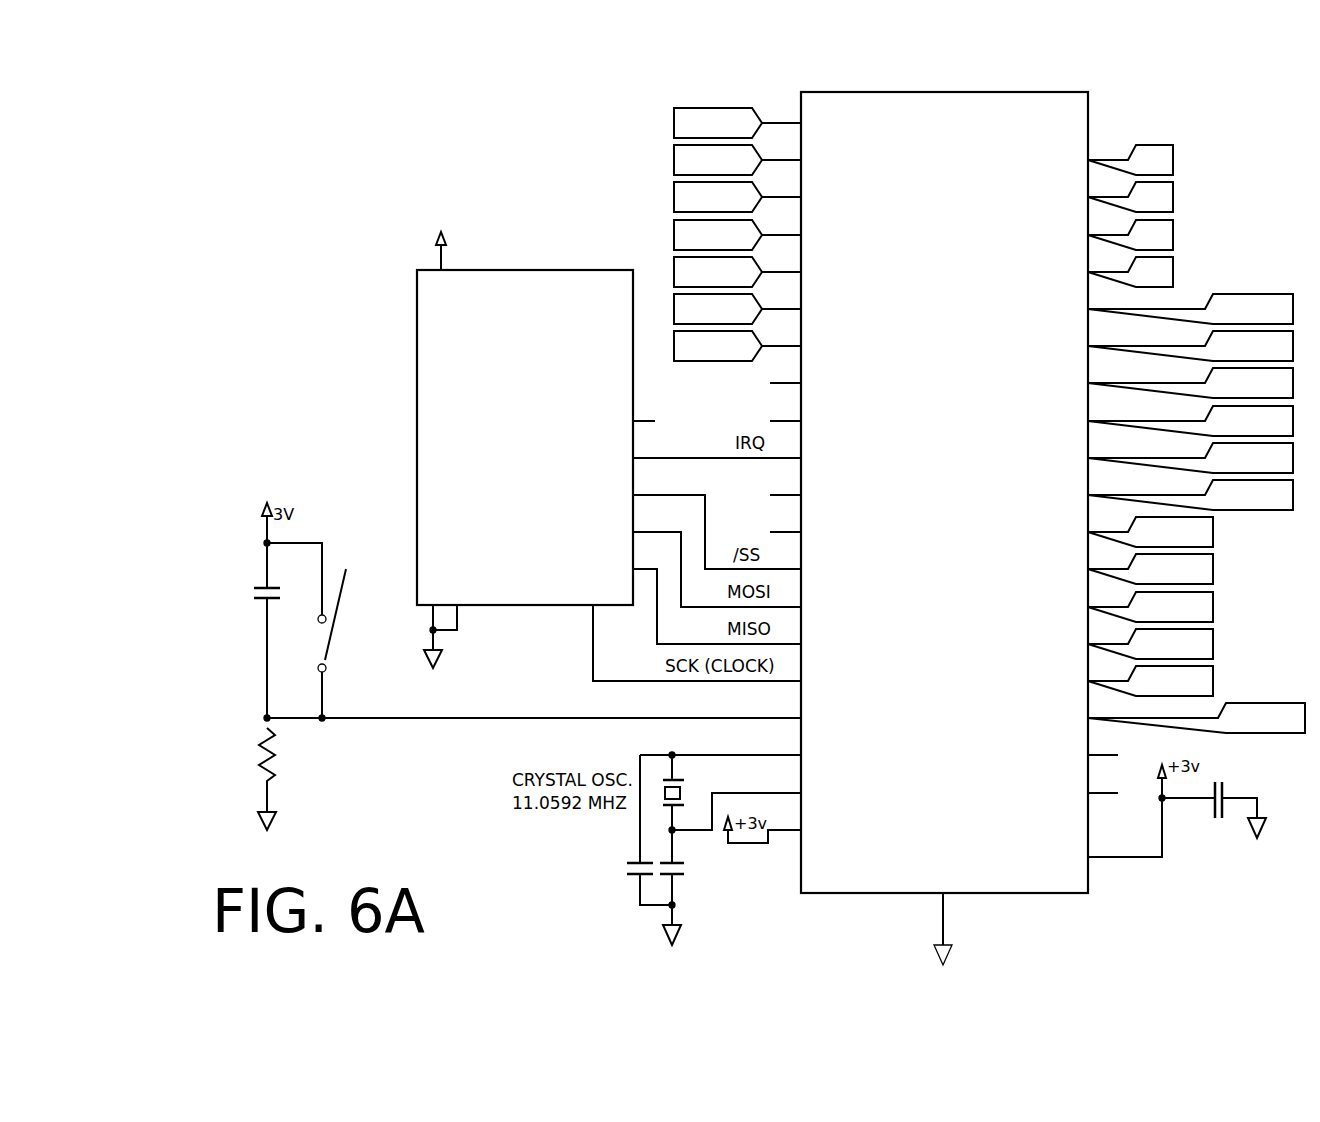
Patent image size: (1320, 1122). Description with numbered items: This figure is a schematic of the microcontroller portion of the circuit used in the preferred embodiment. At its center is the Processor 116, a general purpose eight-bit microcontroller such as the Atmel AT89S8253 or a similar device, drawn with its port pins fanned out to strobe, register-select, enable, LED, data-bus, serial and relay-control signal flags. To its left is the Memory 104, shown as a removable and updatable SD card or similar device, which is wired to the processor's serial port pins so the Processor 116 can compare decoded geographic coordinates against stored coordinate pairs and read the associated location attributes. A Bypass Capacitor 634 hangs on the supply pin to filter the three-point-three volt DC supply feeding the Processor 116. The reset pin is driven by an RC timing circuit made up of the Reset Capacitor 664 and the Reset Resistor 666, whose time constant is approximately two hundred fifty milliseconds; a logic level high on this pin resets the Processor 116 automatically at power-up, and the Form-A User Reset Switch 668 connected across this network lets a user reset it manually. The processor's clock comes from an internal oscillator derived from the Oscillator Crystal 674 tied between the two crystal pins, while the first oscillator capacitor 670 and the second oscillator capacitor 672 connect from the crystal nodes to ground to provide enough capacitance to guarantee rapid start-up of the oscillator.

The memory 104 is at (523, 258).
The processor 116 is at (1058, 908).
The bypass capacitor 634 is at (1206, 808).
The reset capacitor 664 is at (250, 580).
The reset resistor 666 is at (251, 757).
The user reset switch 668 is at (363, 623).
The oscillator capacitor 1 670 is at (623, 871).
The oscillator capacitor 2 672 is at (688, 868).
The oscillator crystal 674 is at (690, 793).